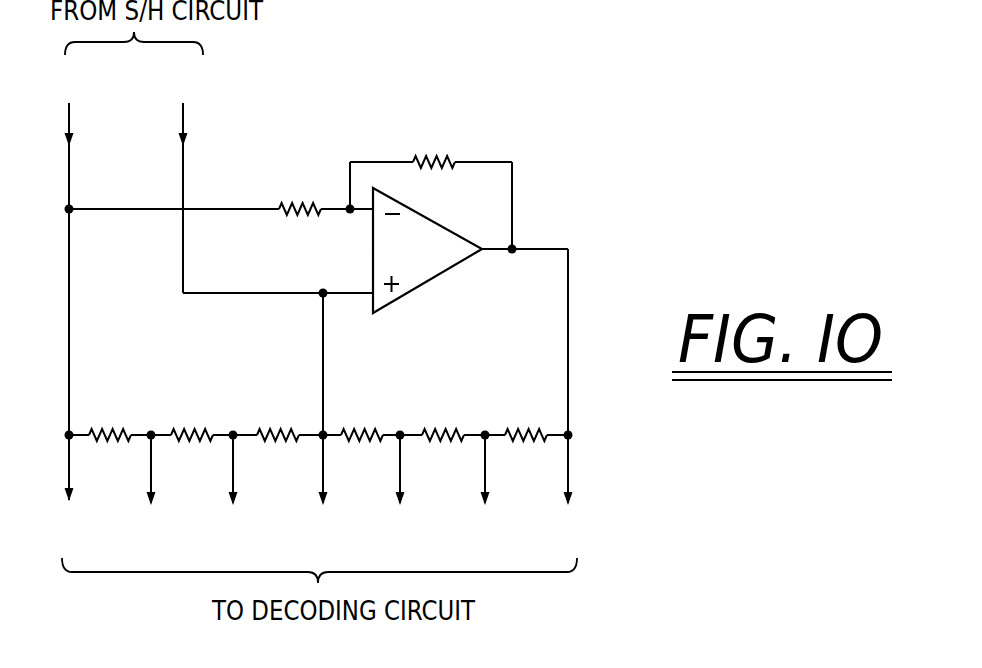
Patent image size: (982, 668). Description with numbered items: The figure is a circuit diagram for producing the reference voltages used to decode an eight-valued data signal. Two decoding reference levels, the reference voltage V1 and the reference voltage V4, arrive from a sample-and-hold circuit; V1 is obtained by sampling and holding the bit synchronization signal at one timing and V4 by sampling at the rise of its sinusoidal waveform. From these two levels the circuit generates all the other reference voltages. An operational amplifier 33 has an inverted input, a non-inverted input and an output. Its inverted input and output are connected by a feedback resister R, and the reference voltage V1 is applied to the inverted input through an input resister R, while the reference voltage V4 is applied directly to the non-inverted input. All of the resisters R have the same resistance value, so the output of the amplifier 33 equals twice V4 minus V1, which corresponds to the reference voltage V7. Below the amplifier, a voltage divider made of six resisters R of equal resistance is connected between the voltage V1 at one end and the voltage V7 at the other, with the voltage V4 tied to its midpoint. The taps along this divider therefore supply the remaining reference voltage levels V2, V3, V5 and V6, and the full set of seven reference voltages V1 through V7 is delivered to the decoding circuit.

The operational amplifier 33 is at (445, 229).
The resister R is at (318, 282).
The reference voltage V1 is at (72, 304).
The reference voltage V2 is at (157, 489).
The reference voltage V3 is at (238, 489).
The reference voltage V4 is at (272, 304).
The reference voltage V5 is at (404, 489).
The reference voltage V6 is at (488, 489).
The reference voltage V7 is at (572, 489).